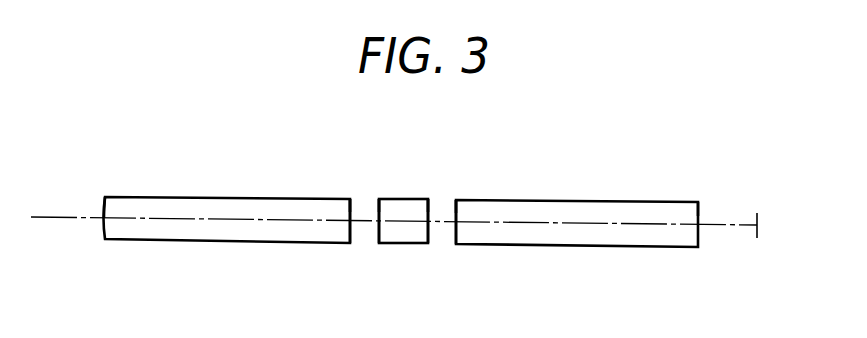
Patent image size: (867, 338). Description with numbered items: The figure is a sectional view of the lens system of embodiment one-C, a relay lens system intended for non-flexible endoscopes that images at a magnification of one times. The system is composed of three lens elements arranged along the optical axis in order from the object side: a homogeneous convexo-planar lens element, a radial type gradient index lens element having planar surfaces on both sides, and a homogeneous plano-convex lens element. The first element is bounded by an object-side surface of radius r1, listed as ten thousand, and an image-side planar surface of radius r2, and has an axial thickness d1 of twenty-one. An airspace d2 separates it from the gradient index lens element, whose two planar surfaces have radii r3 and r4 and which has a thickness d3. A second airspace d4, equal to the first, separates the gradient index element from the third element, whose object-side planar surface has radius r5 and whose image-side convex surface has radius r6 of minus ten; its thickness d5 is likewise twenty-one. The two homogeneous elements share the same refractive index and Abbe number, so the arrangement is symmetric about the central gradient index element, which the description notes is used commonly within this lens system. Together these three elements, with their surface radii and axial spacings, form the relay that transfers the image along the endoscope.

The radius of curvature of first lens surface r1 is at (105, 200).
The radius of curvature of second lens surface r2 is at (350, 208).
The radius of curvature of third lens surface r3 is at (379, 206).
The radius of curvature of fourth lens surface r4 is at (429, 203).
The radius of curvature of fifth lens surface r5 is at (456, 207).
The radius of curvature of sixth lens surface r6 is at (699, 213).
The thickness of first lens element d1 is at (200, 218).
The airspace between first and second lens elements d2 is at (367, 223).
The thickness of gradient index lens element d3 is at (402, 223).
The airspace between second and third lens elements d4 is at (444, 223).
The thickness of third lens element d5 is at (582, 225).